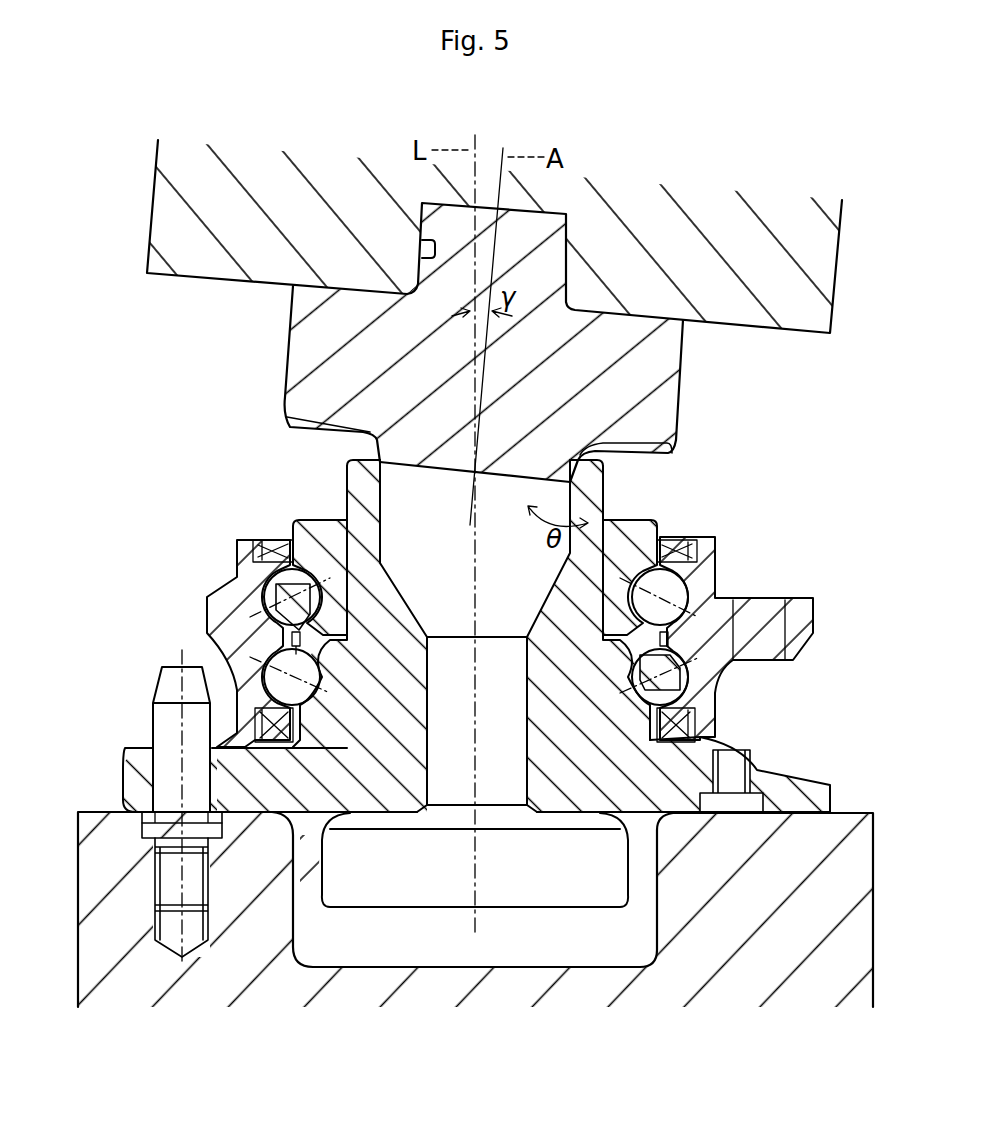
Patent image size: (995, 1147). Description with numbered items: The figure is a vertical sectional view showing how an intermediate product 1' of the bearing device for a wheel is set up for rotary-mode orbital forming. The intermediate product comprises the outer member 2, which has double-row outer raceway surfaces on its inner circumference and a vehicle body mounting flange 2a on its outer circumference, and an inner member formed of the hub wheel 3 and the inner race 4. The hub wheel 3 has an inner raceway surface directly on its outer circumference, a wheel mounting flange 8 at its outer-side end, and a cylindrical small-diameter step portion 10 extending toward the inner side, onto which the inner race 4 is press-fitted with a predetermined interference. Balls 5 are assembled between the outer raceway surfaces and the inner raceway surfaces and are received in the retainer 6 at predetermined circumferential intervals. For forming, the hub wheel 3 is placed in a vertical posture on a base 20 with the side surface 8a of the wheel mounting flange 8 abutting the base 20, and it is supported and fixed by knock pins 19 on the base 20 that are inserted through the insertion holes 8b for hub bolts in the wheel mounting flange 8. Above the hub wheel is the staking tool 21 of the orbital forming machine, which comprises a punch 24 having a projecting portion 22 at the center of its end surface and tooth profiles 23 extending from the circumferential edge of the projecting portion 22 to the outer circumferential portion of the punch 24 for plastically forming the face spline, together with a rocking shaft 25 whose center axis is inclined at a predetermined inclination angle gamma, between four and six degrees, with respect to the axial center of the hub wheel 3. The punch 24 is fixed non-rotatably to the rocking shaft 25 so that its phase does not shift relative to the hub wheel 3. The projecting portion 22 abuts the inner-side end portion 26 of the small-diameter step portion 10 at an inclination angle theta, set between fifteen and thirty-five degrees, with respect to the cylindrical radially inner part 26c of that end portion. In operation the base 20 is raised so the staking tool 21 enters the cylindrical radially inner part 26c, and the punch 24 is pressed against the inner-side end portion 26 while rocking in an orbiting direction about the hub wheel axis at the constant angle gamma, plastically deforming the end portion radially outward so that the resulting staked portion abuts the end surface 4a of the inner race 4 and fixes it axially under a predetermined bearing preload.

The intermediate product 1' is at (508, 636).
The outer member 2 is at (194, 620).
The vehicle body mounting flange 2a is at (818, 627).
The hub wheel 3 is at (316, 911).
The inner race 4 is at (282, 534).
The end surface 4a is at (632, 520).
The balls 5 is at (690, 581).
The retainer 6 is at (630, 674).
The wheel mounting flange 8 is at (476, 775).
The side surface 8a is at (830, 798).
The insertion holes 8b is at (158, 762).
The small-diameter step portion 10 is at (363, 550).
The knock pins 19 is at (173, 818).
The base 20 is at (135, 964).
The staking tool 21 is at (587, 372).
The projecting portion 22 is at (500, 477).
The tooth profiles 23 is at (665, 462).
The punch 24 is at (679, 388).
The rocking shaft 25 is at (817, 254).
The inner-side end portion 26 is at (358, 478).
The cylindrical radially inner part 26c is at (383, 502).